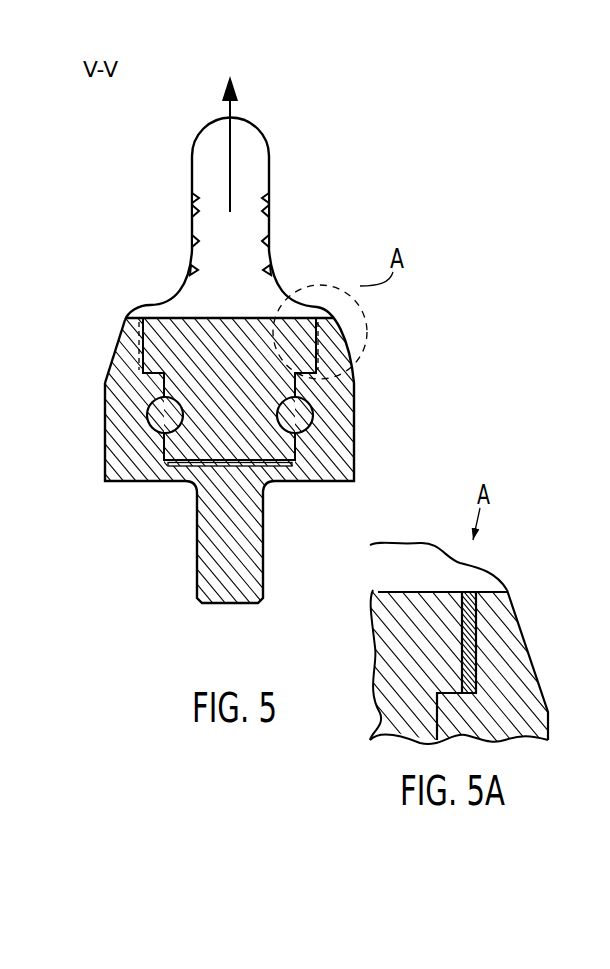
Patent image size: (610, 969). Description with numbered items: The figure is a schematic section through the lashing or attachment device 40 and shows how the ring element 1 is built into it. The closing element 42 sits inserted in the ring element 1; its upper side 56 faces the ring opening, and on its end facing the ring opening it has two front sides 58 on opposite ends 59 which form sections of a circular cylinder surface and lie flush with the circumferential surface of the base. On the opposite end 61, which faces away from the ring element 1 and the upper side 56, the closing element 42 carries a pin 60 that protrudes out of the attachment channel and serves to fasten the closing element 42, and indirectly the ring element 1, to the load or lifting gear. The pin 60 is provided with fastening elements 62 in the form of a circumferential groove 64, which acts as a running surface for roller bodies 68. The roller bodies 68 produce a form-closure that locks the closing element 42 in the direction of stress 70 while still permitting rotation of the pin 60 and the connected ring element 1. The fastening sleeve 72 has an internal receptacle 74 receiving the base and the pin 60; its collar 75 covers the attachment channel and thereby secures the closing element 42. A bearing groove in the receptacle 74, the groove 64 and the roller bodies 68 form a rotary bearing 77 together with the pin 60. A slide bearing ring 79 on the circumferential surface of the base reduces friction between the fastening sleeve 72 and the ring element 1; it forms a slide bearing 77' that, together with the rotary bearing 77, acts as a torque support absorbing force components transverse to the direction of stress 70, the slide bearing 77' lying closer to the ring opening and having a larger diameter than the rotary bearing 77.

In FIG. 5, the ring element 1 is at (358, 196).
In FIG. 5A, the ring element 1 is at (372, 670).
In FIG. 5, the lashing or attachment device 40 is at (293, 127).
In FIG. 5, the direction of stress 70 is at (229, 116).
In FIG. 5, the upper side 56 is at (275, 326).
In FIG. 5, the internal receptacle 74 is at (333, 298).
In FIG. 5, the closing element 42 is at (334, 320).
In FIG. 5, the front sides 58 is at (128, 362).
In FIG. 5, the ends 59 is at (340, 337).
In FIG. 5, the collar 75 is at (128, 348).
In FIG. 5, the slide bearing ring 79 is at (362, 374).
In FIG. 5A, the slide bearing ring 79 is at (525, 613).
In FIG. 5, the rotary bearing 77 is at (296, 462).
In FIG. 5, the end 61 is at (228, 470).
In FIG. 5, the roller bodies 68 is at (300, 413).
In FIG. 5, the fastening sleeve 72 is at (306, 441).
In FIG. 5A, the fastening sleeve 72 is at (525, 652).
In FIG. 5, the pin 60 is at (302, 466).
In FIG. 5, the fastening elements 62 is at (263, 422).
In FIG. 5, the circumferential groove 64 is at (278, 437).
In FIG. 5A, the slide bearing 77' is at (484, 642).